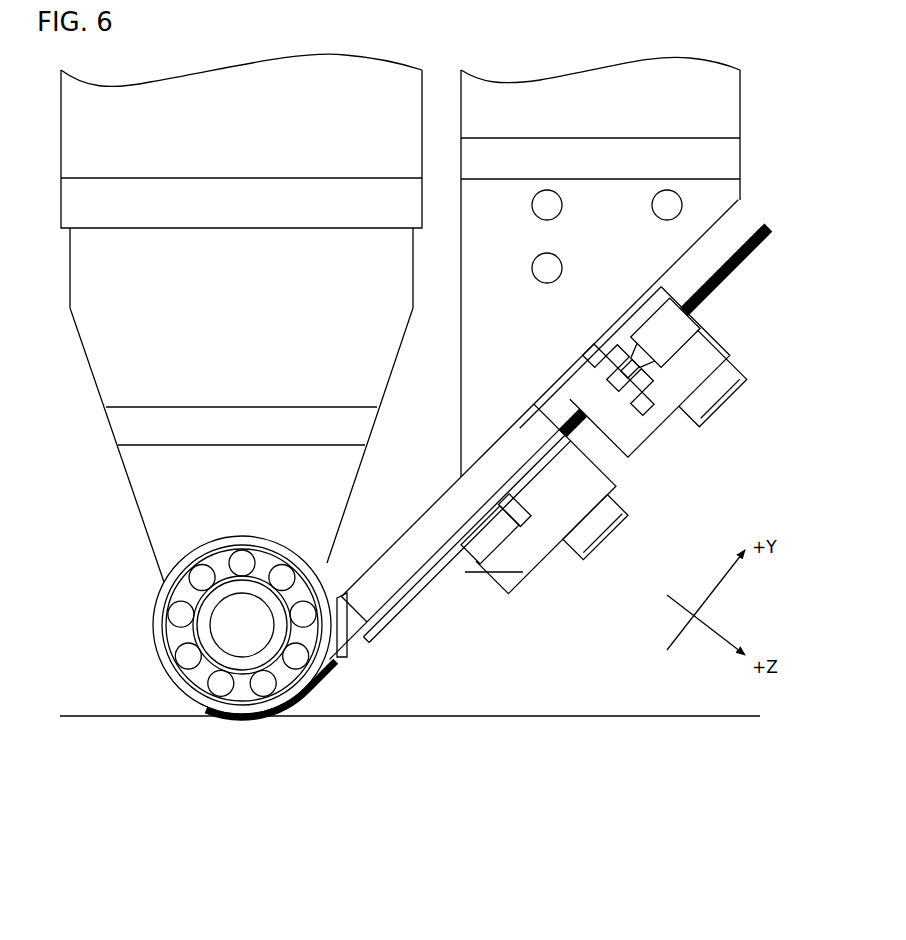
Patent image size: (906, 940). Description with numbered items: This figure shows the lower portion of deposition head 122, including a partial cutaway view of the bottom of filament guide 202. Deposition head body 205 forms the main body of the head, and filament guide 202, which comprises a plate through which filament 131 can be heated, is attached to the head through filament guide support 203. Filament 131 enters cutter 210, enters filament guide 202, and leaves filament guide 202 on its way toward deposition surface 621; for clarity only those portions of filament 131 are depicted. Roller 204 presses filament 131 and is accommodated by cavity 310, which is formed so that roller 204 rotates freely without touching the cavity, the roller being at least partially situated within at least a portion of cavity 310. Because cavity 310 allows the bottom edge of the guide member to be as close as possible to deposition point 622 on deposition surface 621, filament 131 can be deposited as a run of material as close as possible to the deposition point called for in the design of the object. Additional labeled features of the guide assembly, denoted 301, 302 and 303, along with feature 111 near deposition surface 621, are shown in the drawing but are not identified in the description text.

The surface 111 is at (598, 733).
The deposition head 122 is at (712, 501).
The filament 131 is at (301, 694).
The filament guide 202 is at (478, 580).
The filament guide support 203 is at (715, 199).
The roller 204 is at (155, 627).
The deposition head body 205 is at (107, 352).
The cutter 210 is at (669, 445).
The arm plate 301 is at (403, 548).
The rail 302 is at (405, 605).
The block 303 is at (598, 487).
The cavity 310 is at (343, 660).
The deposition surface 621 is at (458, 715).
The deposition point 622 is at (240, 724).